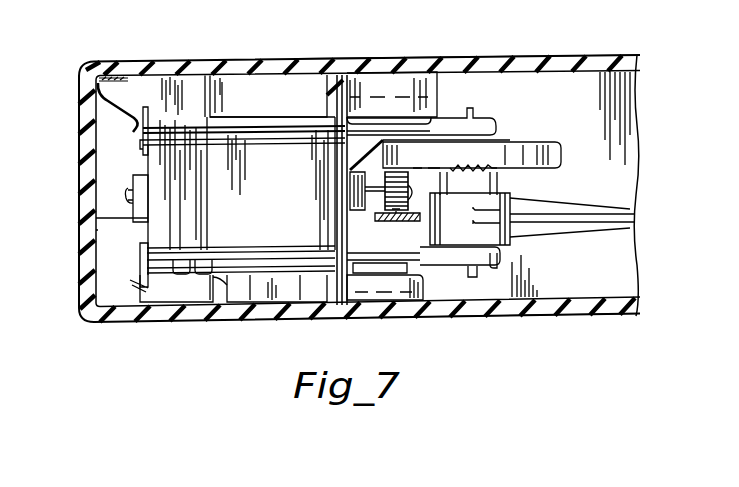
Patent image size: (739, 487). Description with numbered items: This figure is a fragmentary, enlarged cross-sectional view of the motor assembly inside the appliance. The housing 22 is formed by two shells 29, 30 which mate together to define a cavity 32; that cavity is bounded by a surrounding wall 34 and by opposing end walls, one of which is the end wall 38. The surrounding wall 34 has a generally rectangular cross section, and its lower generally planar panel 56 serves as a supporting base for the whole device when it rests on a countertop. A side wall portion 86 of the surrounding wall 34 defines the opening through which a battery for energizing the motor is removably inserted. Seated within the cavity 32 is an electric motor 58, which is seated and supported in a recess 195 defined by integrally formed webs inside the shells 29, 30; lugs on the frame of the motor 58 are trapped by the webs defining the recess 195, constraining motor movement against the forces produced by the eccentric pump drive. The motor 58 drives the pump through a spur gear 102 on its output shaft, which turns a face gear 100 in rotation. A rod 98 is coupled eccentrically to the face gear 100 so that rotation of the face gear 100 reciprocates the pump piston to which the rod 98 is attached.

The housing 22 is at (456, 58).
The shell 29 is at (292, 62).
The shell 30 is at (357, 307).
The cavity 32 is at (571, 74).
The surrounding wall 34 is at (79, 170).
The end wall 38 is at (566, 130).
The panel 56 is at (523, 315).
The electric motor 58 is at (275, 209).
The side wall portion 86 is at (79, 270).
The rod 98 is at (573, 228).
The face gear 100 is at (560, 158).
The spur gear 102 is at (392, 222).
The recess 195 is at (333, 124).